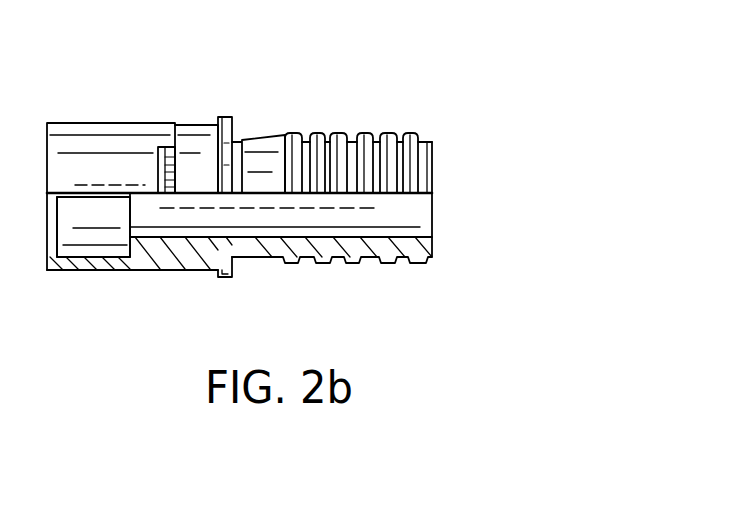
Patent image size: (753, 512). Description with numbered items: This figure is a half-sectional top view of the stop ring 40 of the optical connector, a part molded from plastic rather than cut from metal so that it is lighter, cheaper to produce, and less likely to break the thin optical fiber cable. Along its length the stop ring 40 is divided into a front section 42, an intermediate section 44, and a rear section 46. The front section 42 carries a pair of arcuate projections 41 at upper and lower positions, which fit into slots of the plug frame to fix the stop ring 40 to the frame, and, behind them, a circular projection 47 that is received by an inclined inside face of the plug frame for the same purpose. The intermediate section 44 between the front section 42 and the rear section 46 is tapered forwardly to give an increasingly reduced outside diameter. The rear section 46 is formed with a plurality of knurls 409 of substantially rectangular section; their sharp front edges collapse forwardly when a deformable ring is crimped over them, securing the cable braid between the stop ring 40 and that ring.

The stop ring 40 is at (435, 278).
The arcuate projections 41 is at (158, 183).
The front section 42 is at (227, 62).
The intermediate section 44 is at (285, 135).
The rear section 46 is at (358, 100).
The circular projection 47 is at (222, 278).
The knurls 409 is at (365, 134).